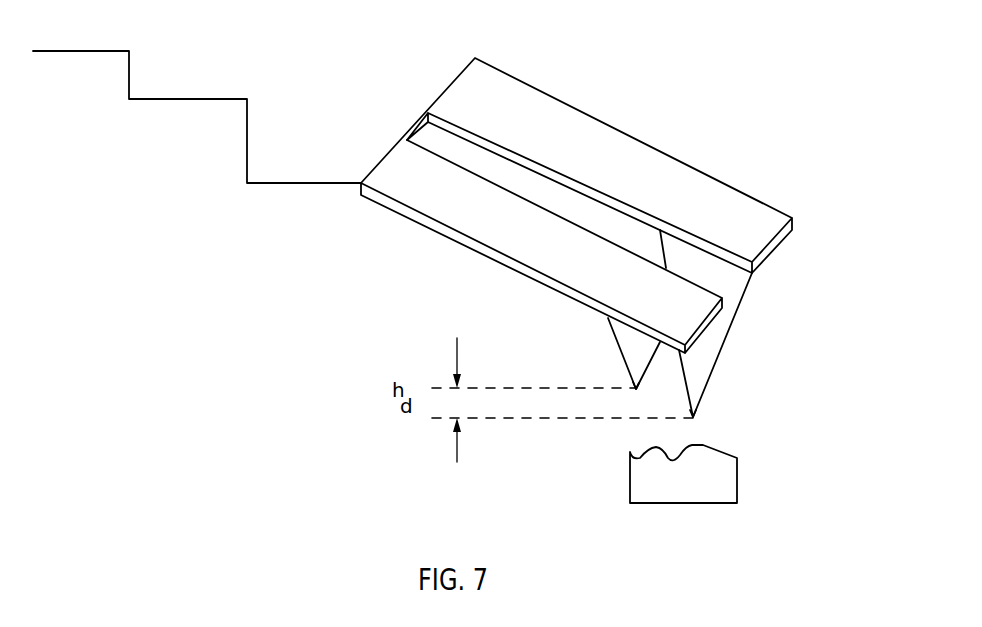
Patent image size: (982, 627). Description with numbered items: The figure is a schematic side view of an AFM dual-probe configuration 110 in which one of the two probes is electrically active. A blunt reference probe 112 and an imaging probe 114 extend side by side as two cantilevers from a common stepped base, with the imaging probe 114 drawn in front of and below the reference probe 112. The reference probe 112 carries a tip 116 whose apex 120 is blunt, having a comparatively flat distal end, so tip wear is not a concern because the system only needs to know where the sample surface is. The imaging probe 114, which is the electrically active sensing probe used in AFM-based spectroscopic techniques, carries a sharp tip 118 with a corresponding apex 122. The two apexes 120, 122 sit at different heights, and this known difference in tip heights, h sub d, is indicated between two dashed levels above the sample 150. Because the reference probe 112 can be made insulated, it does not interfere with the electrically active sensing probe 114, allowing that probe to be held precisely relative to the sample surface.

The AFM dual-probe configuration 110 is at (702, 55).
The reference probe 112 is at (729, 148).
The imaging probe 114 is at (470, 278).
The tip 116 is at (722, 278).
The sharp tip 118 is at (632, 355).
The apex 120 is at (695, 418).
The apex 122 is at (636, 389).
The sample surface 150 is at (660, 478).